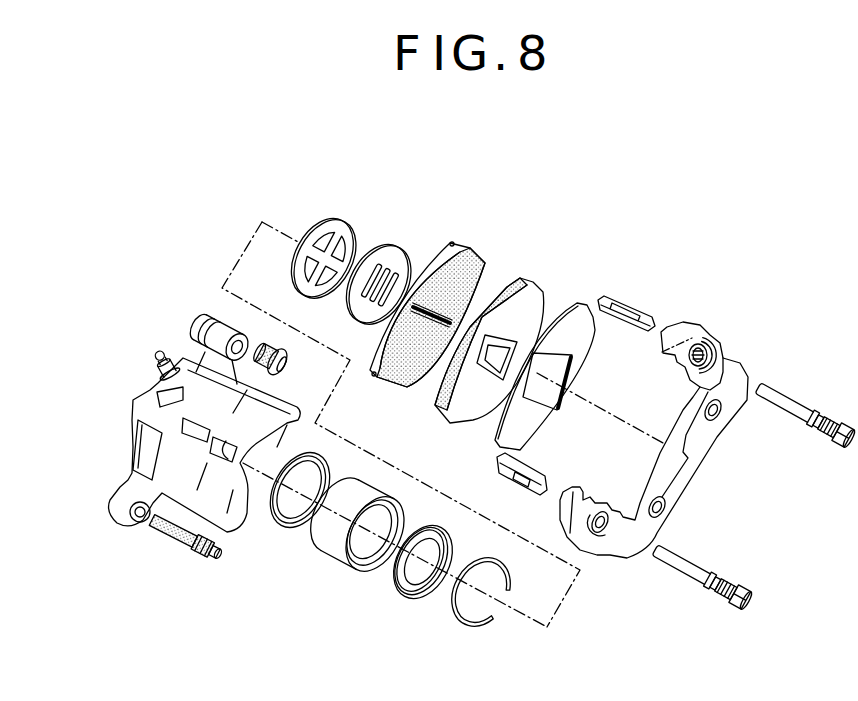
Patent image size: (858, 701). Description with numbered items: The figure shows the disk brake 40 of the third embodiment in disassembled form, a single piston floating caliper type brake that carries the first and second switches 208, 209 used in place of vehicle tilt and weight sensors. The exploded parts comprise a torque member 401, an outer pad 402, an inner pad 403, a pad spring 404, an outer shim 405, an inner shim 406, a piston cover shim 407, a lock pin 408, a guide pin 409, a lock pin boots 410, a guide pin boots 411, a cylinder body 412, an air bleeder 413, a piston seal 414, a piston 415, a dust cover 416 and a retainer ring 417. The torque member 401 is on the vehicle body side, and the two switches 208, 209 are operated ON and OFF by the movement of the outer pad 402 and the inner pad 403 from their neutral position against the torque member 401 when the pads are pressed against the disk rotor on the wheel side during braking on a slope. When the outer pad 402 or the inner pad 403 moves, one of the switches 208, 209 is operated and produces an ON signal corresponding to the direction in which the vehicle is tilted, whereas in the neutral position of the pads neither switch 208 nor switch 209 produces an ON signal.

The disk brake 40 is at (221, 181).
The first switch 208 is at (604, 531).
The second switch 209 is at (710, 359).
The torque member 401 is at (718, 342).
The outer pad 402 is at (540, 278).
The inner pad 403 is at (476, 252).
The pad spring 404 is at (636, 307).
The outer shim 405 is at (586, 305).
The inner shim 406 is at (399, 249).
The piston cover shim 407 is at (352, 222).
The lock pin 408 is at (808, 412).
The guide pin 409 is at (712, 573).
The lock pin boots 410 is at (280, 348).
The guide pin boots 411 is at (178, 540).
The cylinder body 412 is at (134, 434).
The air bleeder 413 is at (158, 358).
The piston seal 414 is at (284, 525).
The piston 415 is at (344, 563).
The dust cover 416 is at (410, 598).
The retainer ring 417 is at (462, 627).